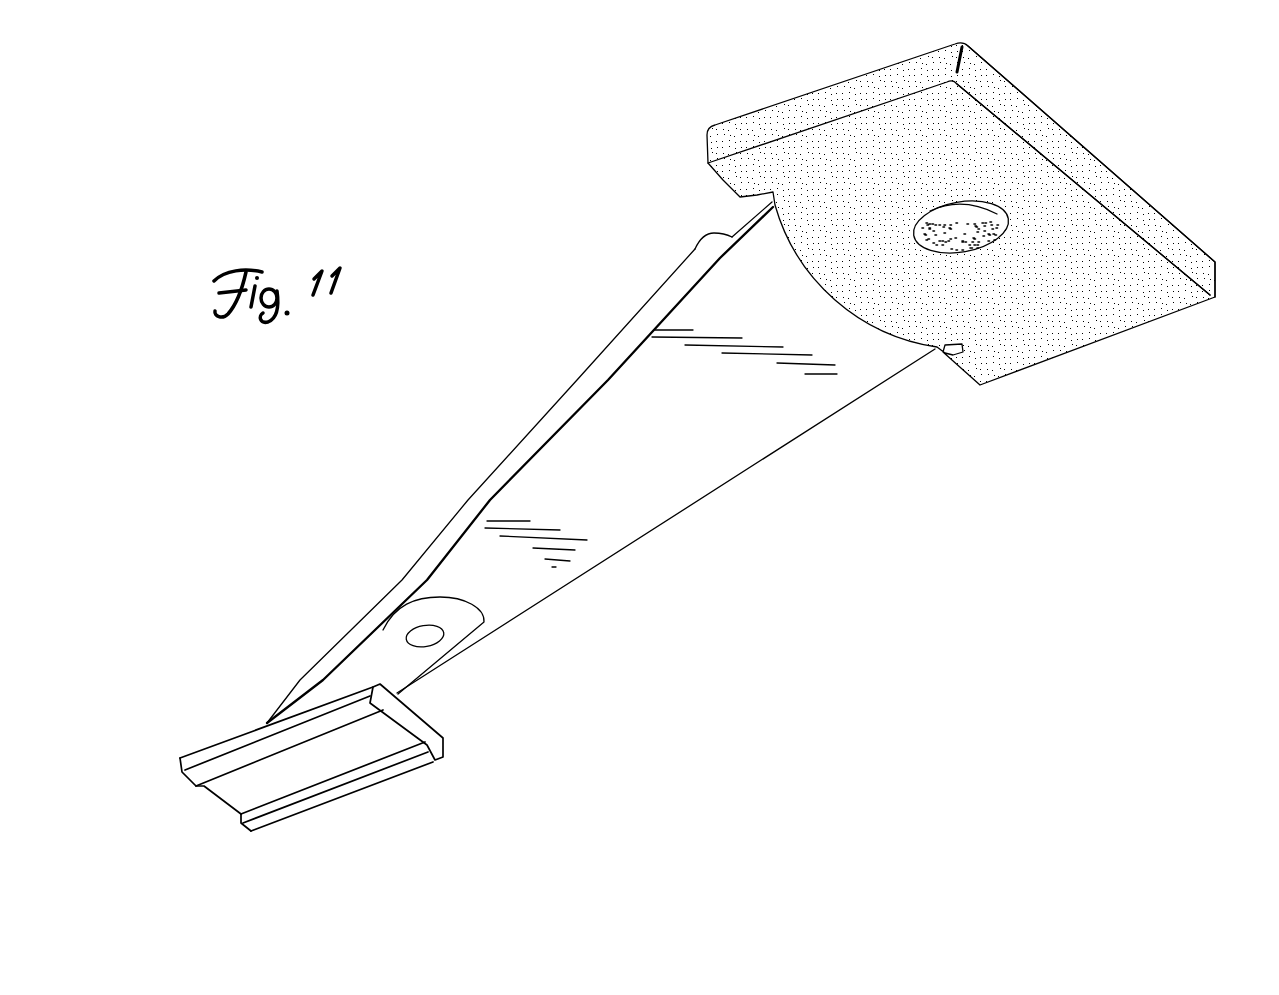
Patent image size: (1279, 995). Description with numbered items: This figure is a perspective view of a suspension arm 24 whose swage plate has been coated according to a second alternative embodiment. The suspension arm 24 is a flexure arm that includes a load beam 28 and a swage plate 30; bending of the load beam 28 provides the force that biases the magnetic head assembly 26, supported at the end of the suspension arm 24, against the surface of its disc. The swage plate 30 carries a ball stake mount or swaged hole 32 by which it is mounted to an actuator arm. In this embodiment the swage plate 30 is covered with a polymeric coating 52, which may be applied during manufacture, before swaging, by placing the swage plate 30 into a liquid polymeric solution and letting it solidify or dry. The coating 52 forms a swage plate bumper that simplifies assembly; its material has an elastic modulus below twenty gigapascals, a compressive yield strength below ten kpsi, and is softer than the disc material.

The suspension arm 24 is at (585, 362).
The magnetic head assembly 26 is at (303, 775).
The load beam 28 is at (652, 493).
The swage plate 30 is at (1007, 165).
The swaged hole 32 is at (1007, 219).
The polymeric coating 52 is at (1143, 267).